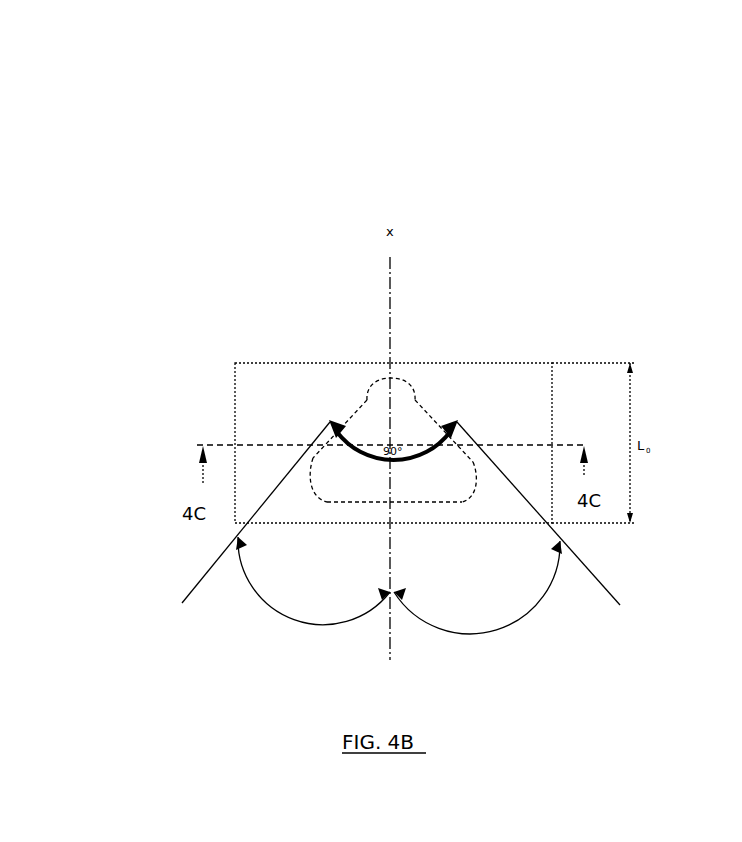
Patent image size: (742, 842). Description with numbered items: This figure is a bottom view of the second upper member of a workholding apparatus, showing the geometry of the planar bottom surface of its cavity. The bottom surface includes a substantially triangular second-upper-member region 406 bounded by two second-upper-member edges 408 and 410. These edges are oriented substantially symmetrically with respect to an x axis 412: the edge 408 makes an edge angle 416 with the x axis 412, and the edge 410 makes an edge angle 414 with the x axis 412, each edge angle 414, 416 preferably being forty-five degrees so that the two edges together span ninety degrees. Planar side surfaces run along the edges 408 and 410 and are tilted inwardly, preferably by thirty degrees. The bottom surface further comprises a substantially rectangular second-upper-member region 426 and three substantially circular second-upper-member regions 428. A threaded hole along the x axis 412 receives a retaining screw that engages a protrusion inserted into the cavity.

The substantially triangular second-upper-member region 406 is at (401, 425).
The second-upper-member edge 408 is at (443, 413).
The second-upper-member edge 410 is at (343, 417).
The x axis 412 is at (388, 313).
The edge angle 414 is at (293, 617).
The edge angle 416 is at (520, 618).
The substantially rectangular second-upper-member region 426 is at (363, 488).
The substantially circular second-upper-member regions 428 is at (382, 385).